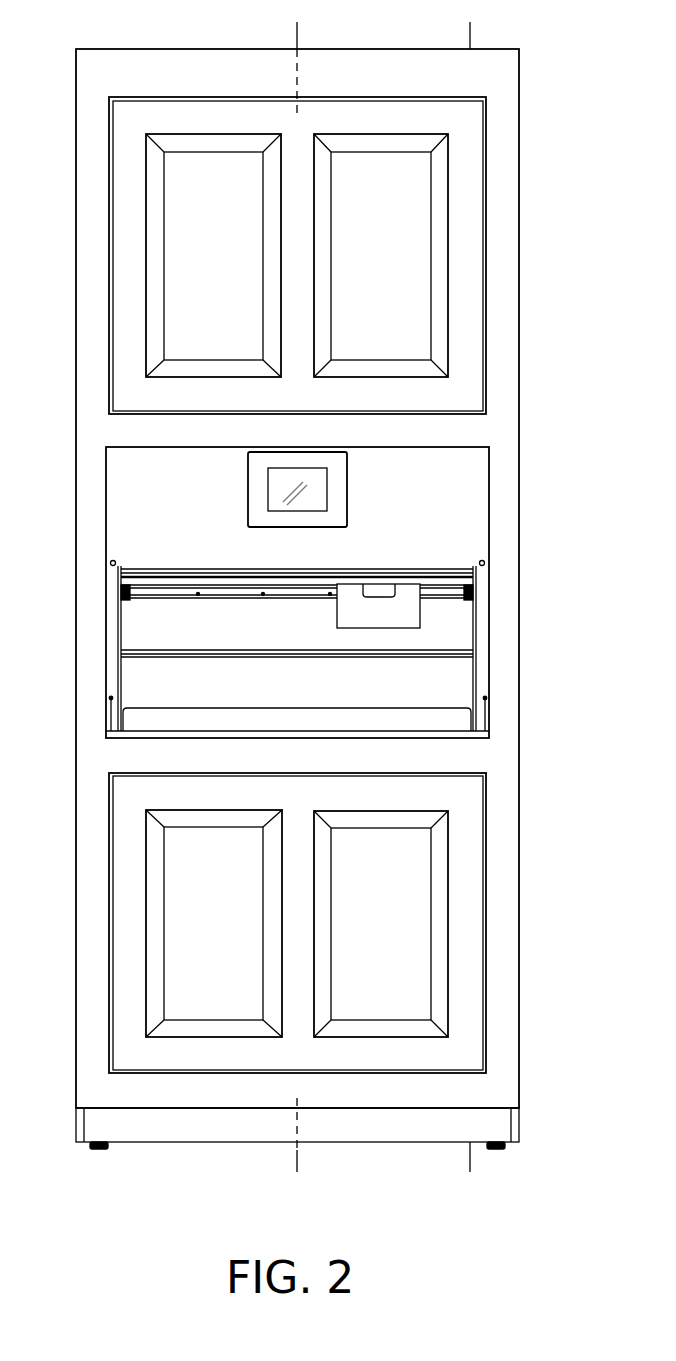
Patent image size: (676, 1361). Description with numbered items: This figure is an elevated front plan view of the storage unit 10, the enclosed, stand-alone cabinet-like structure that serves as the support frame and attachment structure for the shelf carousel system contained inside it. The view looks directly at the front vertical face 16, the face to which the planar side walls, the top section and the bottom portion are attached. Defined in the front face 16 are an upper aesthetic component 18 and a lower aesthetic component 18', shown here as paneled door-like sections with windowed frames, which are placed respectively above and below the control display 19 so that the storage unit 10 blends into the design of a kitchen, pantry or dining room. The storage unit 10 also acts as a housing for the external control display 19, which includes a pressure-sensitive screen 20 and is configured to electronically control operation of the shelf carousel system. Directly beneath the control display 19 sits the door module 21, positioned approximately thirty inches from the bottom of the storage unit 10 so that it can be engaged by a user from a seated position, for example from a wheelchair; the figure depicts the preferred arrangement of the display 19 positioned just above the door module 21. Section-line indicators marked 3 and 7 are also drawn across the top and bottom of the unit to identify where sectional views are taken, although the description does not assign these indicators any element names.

The storage unit 10 is at (296, 599).
The front vertical face 16 is at (508, 98).
The upper aesthetic component 18 is at (336, 255).
The lower aesthetic component 18' is at (339, 923).
The control display 19 is at (307, 489).
The pressure-sensitive screen 20 is at (283, 482).
The door module 21 is at (337, 623).
The section line for FIG. 3 is at (470, 22).
The section line for FIG. 7 is at (297, 22).